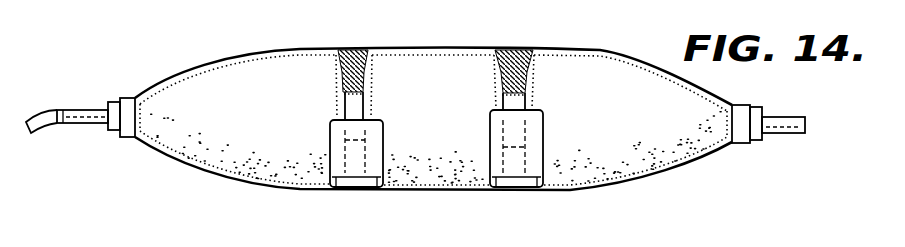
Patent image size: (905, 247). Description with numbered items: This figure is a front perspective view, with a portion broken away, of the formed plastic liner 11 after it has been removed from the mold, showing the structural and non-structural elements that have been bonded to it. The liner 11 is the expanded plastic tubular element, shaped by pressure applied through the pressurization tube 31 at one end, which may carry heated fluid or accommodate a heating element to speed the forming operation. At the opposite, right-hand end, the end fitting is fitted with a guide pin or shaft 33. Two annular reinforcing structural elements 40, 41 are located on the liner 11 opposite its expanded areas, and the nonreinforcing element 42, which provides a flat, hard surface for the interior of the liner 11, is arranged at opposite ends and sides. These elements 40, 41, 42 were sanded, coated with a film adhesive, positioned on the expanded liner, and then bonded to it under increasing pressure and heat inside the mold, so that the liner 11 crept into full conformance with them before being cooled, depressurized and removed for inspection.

The plastic liner 11 is at (265, 163).
The pressurization tube 31 is at (82, 122).
The shaft 33 is at (787, 135).
The annular reinforcing structural element 40 is at (362, 75).
The annular reinforcing structural element 41 is at (528, 78).
The nonreinforcing element 42 is at (230, 60).